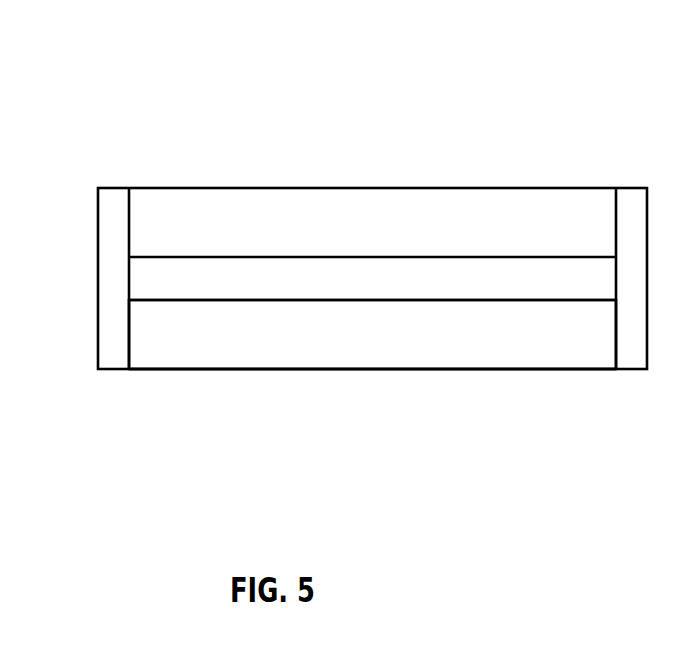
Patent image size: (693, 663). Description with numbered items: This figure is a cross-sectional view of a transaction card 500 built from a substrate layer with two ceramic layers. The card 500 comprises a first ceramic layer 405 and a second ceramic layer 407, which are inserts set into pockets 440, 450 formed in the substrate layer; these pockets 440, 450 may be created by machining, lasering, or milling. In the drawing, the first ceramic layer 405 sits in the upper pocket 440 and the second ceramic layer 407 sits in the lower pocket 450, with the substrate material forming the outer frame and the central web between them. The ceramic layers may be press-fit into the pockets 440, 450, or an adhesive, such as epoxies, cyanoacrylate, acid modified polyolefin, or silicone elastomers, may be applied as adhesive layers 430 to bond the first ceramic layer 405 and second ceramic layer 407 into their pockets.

The card 500 is at (123, 163).
The first ceramic layer 405 is at (198, 192).
The adhesive layers 430 is at (298, 260).
The pocket 440 is at (393, 235).
The second ceramic layer 407 is at (370, 367).
The pocket 450 is at (483, 323).